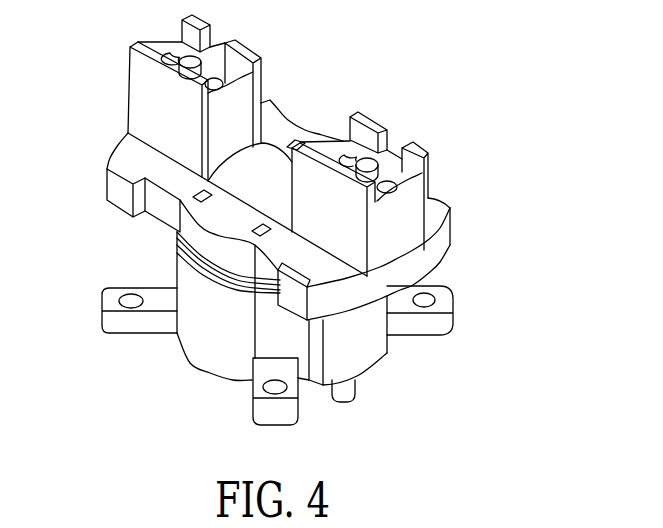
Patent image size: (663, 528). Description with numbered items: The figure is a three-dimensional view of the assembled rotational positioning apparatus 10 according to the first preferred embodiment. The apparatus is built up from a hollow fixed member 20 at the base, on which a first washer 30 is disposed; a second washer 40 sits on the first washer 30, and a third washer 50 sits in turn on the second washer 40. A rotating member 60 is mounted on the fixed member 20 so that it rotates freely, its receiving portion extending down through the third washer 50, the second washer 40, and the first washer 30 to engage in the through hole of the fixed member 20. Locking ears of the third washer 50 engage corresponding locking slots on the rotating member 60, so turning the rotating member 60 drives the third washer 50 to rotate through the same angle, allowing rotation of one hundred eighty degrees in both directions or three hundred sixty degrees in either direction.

The rotational positioning apparatus 10 is at (374, 115).
The fixed member 20 is at (227, 350).
The first washer 30 is at (254, 312).
The second washer 40 is at (223, 275).
The third washer 50 is at (180, 253).
The rotating member 60 is at (400, 242).